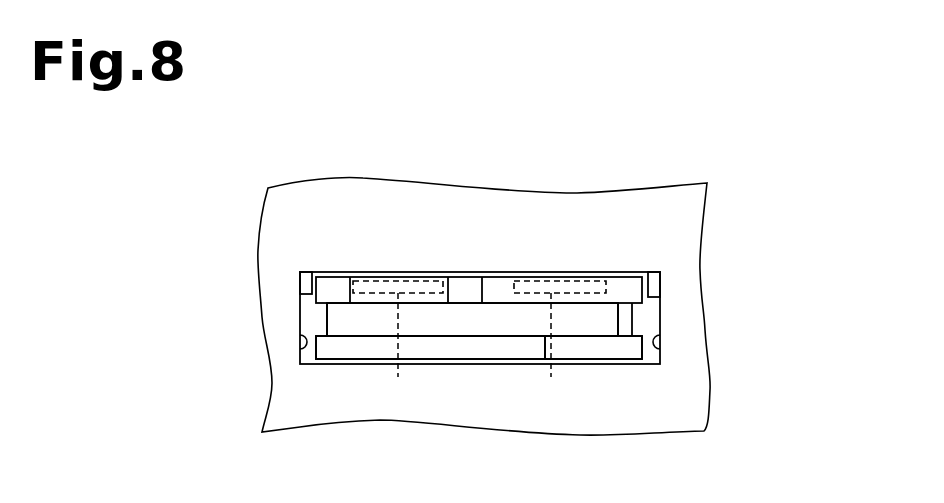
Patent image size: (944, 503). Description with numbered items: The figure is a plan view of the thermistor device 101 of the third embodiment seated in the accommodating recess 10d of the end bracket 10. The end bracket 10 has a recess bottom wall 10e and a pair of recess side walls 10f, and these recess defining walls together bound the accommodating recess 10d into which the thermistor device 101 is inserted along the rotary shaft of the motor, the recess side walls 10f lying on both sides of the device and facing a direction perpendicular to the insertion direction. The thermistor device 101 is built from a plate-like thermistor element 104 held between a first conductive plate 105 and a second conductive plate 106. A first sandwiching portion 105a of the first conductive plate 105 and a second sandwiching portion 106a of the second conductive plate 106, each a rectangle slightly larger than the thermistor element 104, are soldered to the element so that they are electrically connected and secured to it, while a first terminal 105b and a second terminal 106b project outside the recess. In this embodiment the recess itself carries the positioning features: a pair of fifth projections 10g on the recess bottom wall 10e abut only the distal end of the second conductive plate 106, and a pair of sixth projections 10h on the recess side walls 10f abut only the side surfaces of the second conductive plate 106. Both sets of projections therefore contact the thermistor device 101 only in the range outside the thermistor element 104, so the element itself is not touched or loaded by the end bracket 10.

The end bracket 10 is at (699, 201).
The sixth projections 10h is at (303, 286).
The recess bottom wall 10e is at (312, 318).
The accommodating recess 10d is at (647, 318).
The recess side walls 10f is at (300, 347).
The fifth projections 10g is at (477, 349).
The thermistor device 101 is at (591, 371).
The thermistor element 104 is at (466, 326).
The first conductive plate 105 is at (524, 349).
The first sandwiching portion 105a is at (333, 349).
The first terminal 105b is at (640, 352).
The second conductive plate 106 is at (493, 287).
The second sandwiching portion 106a is at (625, 288).
The second terminal 106b is at (418, 288).